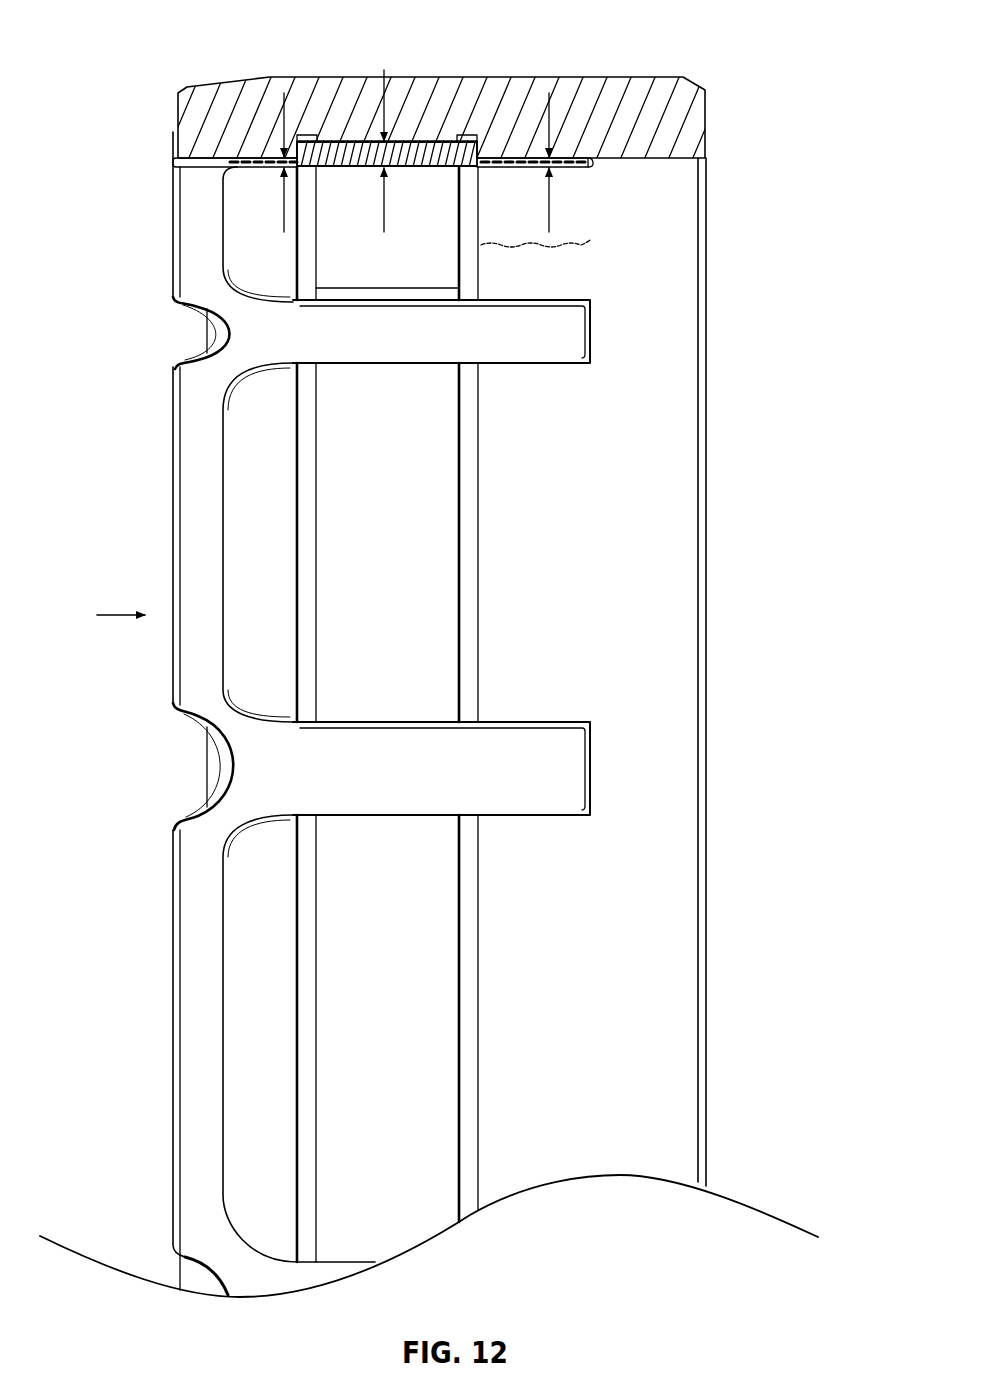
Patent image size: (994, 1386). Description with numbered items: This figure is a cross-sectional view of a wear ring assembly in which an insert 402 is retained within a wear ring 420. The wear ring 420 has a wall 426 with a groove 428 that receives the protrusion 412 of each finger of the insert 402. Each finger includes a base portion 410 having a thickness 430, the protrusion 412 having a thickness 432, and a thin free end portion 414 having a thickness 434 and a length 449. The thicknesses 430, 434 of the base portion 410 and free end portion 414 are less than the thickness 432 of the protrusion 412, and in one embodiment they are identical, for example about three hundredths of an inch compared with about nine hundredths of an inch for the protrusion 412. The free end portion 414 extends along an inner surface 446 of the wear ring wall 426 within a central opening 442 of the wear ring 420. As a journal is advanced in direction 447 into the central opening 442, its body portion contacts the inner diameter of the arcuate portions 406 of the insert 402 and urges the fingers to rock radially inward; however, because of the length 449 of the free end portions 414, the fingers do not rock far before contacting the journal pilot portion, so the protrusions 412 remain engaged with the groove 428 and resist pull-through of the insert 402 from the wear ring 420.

The insert 402 is at (203, 212).
The arcuate portions 406 is at (190, 468).
The base portion 410 is at (250, 157).
The protrusion 412 is at (478, 157).
The free end portion 414 is at (575, 170).
The wear ring 420 is at (600, 100).
The wall 426 is at (673, 462).
The groove 428 is at (447, 147).
The thickness 430 is at (285, 113).
The thickness 432 is at (386, 97).
The thickness 434 is at (551, 108).
The central opening 442 is at (678, 655).
The inner surface 446 is at (582, 407).
The direction 447 is at (120, 615).
The length 449 is at (537, 251).